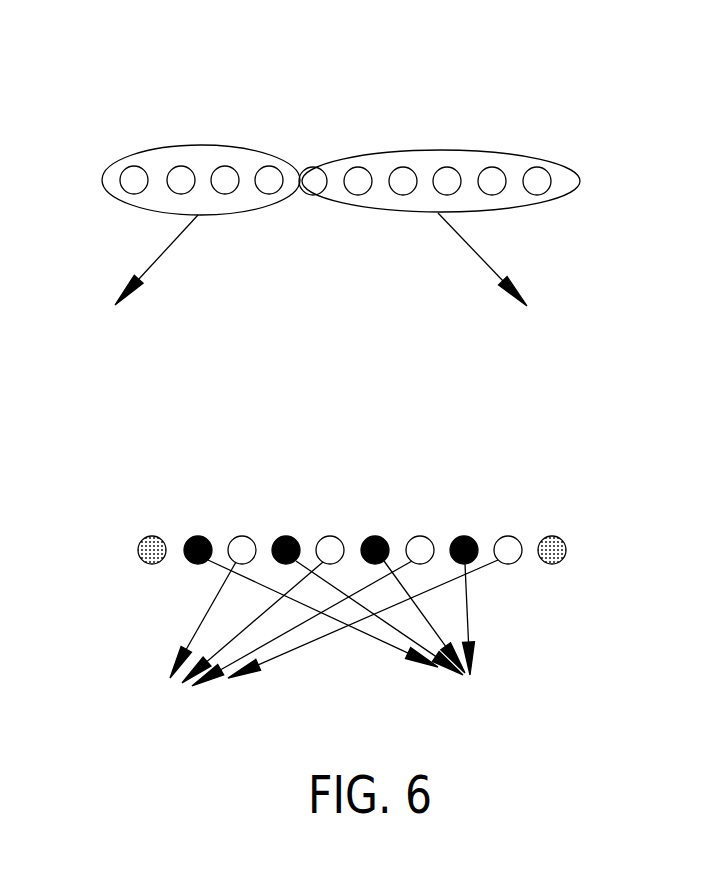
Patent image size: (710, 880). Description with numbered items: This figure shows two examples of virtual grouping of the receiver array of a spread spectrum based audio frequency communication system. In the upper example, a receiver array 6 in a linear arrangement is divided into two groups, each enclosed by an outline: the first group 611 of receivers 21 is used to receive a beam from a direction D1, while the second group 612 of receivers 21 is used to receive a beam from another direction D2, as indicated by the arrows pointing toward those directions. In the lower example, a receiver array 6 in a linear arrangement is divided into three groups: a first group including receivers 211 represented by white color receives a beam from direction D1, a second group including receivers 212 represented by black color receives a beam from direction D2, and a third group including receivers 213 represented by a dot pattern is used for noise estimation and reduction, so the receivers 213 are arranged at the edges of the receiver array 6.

The receiver array 6 is at (316, 108).
The receiver 21 is at (136, 166).
The first group 611 is at (206, 146).
The second group 612 is at (440, 152).
The receivers of the first group 211 is at (242, 537).
The receivers of the second group 212 is at (203, 537).
The receivers of the third group 213 is at (138, 550).